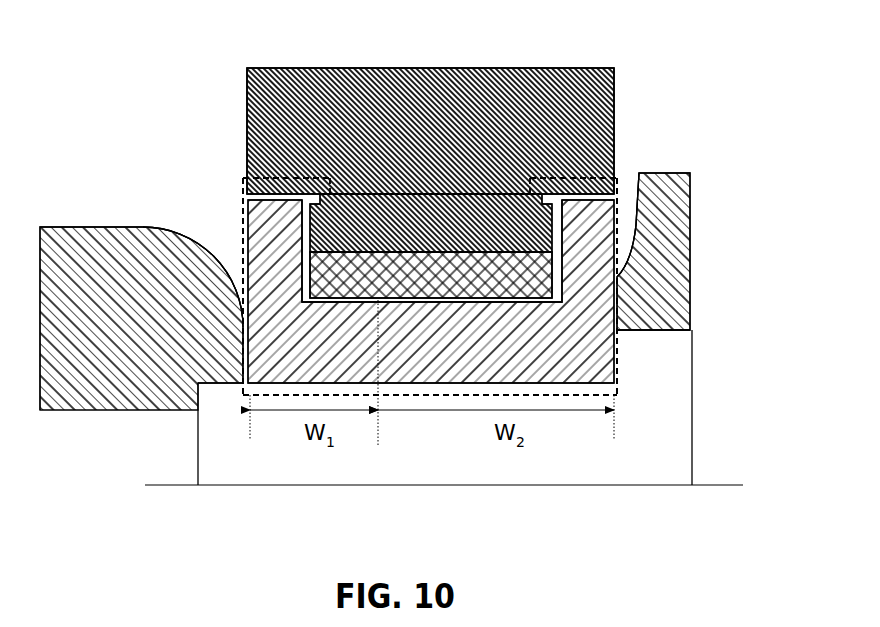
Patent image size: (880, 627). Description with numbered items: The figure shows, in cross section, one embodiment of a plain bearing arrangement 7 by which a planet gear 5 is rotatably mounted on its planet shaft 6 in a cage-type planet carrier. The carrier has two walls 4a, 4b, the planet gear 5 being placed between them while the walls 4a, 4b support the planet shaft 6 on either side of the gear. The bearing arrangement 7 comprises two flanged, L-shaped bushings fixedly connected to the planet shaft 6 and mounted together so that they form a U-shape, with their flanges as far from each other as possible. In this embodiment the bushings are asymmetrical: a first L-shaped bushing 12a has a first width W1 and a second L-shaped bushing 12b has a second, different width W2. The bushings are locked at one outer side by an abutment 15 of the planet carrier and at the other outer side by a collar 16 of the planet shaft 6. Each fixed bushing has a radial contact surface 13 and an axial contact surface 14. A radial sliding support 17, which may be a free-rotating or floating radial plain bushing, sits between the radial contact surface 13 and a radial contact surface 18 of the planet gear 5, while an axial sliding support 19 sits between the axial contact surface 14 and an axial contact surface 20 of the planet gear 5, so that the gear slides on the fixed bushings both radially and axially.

The wall of the planet carrier 4a is at (110, 250).
The wall of the planet carrier 4b is at (668, 195).
The planet gear 5 is at (530, 90).
The planet shaft 6 is at (660, 440).
The plain bearing arrangement 7 is at (623, 247).
The first L-shaped bushing 12a is at (243, 248).
The second L-shaped bushing 12b is at (615, 192).
The radial contact surface 13 is at (463, 307).
The axial contact surface 14 is at (288, 218).
The abutment of the planet carrier 15 is at (226, 330).
The collar of the planet shaft 16 is at (655, 360).
The radial sliding support 17 is at (527, 270).
The radial contact surface of the planet gear 18 is at (479, 245).
The axial sliding support 19 is at (243, 183).
The axial contact surface of the planet gear 20 is at (430, 109).